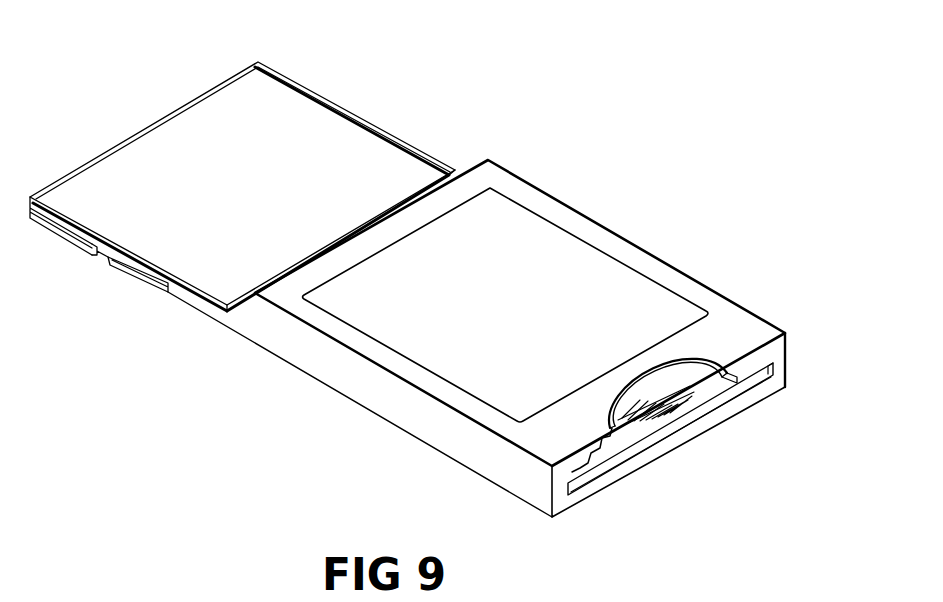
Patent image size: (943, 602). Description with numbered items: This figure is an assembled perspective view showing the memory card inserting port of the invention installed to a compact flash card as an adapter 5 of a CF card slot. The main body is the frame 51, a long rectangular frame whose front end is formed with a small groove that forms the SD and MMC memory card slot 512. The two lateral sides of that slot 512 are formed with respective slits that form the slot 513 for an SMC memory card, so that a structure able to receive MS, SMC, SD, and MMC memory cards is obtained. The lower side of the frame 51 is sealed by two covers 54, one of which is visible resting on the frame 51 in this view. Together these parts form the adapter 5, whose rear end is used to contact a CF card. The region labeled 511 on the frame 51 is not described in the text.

The adapter 5 is at (431, 266).
The frame 51 is at (500, 304).
The recess 511 is at (722, 365).
The SD and MMC memory card slot 512 is at (737, 383).
The SMC memory card slot 513 is at (760, 370).
The cover 54 is at (352, 138).